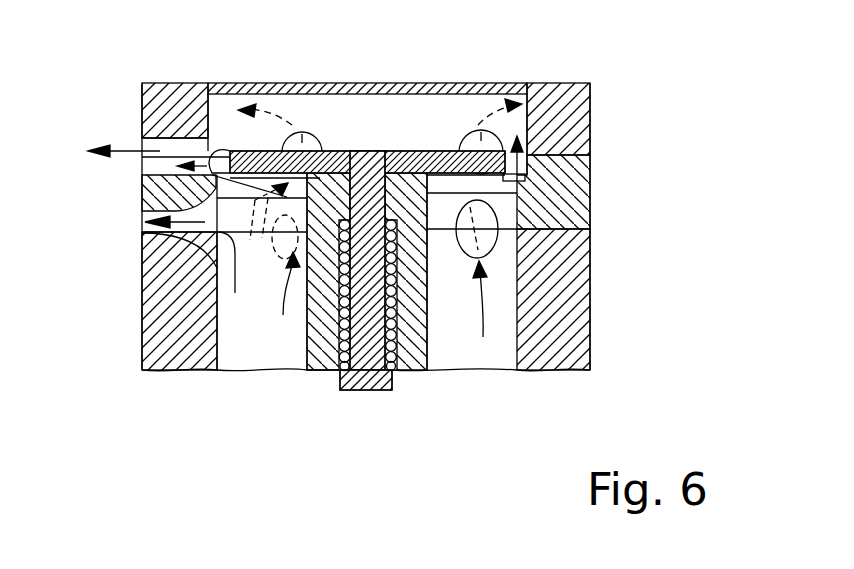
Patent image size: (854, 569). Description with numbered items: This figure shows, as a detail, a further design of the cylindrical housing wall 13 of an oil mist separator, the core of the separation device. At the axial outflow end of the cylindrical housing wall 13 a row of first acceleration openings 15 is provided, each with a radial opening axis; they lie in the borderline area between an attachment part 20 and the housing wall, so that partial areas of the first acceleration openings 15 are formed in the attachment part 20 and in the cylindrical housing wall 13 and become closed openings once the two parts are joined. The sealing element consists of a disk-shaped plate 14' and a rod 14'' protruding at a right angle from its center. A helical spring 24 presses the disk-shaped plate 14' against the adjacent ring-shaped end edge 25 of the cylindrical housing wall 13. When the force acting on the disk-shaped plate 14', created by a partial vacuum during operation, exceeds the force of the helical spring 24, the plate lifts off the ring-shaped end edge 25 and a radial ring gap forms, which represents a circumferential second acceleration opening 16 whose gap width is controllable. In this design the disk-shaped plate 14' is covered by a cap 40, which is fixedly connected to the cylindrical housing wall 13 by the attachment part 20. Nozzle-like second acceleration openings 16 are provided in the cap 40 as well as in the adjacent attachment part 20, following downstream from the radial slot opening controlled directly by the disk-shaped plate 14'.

The cylindrical housing wall 13 is at (560, 327).
The disk-shaped plate 14' is at (357, 94).
The rod 14'' is at (367, 309).
The first acceleration openings 15 is at (283, 258).
The second acceleration openings 16 is at (212, 151).
The attachment part 20 is at (553, 208).
The helical spring 24 is at (385, 323).
The ring-shaped end edge 25 is at (467, 178).
The cap 40 is at (515, 95).